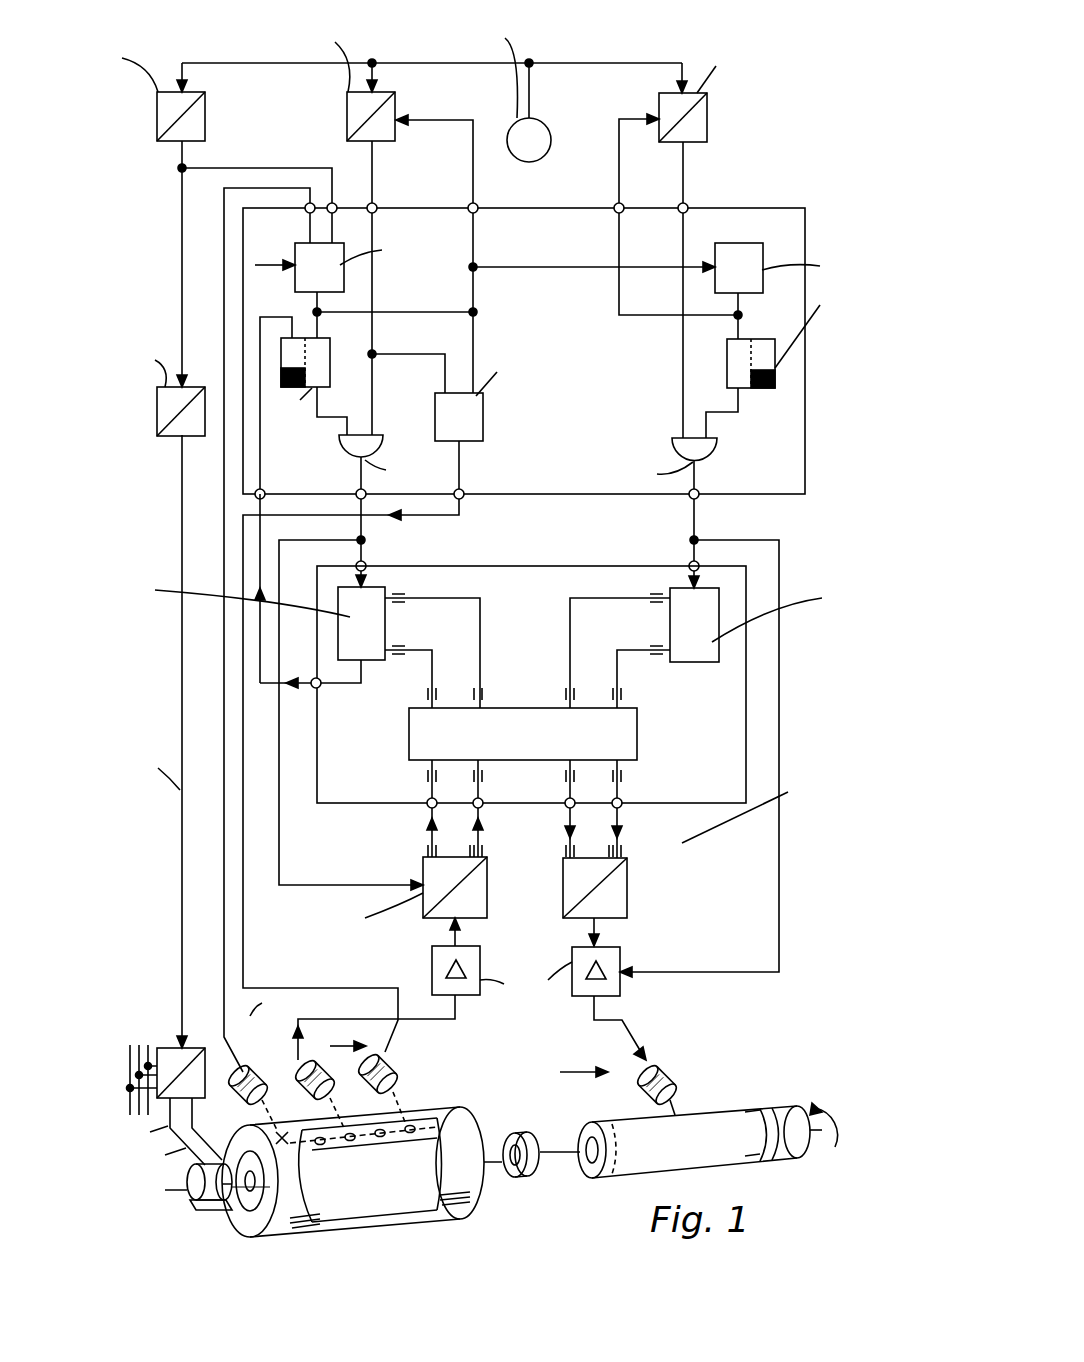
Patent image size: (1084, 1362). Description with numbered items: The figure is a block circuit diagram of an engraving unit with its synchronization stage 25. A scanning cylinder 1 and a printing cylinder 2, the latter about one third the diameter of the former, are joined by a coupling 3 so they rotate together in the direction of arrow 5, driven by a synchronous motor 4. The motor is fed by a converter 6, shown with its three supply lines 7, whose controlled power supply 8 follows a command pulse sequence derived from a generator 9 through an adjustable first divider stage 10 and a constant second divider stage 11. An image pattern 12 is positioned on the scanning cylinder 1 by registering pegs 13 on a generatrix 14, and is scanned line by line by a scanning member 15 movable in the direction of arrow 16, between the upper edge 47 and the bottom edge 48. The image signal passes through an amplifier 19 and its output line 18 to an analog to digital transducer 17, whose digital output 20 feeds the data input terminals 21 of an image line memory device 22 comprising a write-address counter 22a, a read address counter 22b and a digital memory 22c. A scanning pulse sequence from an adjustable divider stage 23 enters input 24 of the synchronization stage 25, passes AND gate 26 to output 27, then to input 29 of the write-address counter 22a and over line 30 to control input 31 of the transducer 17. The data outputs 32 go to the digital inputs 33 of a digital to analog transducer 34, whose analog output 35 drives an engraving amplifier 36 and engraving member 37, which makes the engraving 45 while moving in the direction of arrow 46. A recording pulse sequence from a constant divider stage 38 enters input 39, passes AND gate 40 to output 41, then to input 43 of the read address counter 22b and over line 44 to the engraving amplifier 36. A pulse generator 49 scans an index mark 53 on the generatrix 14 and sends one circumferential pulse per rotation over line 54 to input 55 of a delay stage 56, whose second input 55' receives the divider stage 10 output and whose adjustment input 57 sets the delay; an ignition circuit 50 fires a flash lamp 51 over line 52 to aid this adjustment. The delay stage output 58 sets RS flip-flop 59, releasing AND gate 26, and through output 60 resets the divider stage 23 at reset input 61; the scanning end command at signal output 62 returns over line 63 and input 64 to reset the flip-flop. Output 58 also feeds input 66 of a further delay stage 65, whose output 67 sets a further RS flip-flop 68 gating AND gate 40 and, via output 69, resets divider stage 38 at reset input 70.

The scanning cylinder 1 is at (472, 1188).
The printing cylinder 2 is at (597, 1122).
The coupling 3 is at (520, 1131).
The synchronous motor 4 is at (194, 1198).
The arrow 5 is at (813, 1098).
The converter 6 is at (170, 1048).
The three-phase supply lines 7 is at (132, 1046).
The controlled power supply 8 is at (193, 1123).
The generator 9 is at (541, 124).
The first divider stage 10 is at (200, 110).
The second divider stage 11 is at (186, 432).
The image pattern 12 is at (462, 1208).
The registering pegs 13 is at (418, 1125).
The generatrix 14 is at (448, 1112).
The scanning member 15 is at (303, 1070).
The arrow 16 is at (330, 1046).
The analog to digital transducer 17 is at (487, 885).
The amplifier output line 18 is at (446, 922).
The amplifier 19 is at (469, 968).
The digital output 20 is at (478, 852).
The data input terminals 21 is at (430, 823).
The image line memory device 22 is at (334, 805).
The write-address counter 22a is at (372, 607).
The read address counter 22b is at (678, 603).
The digital memory 22c is at (637, 737).
The frequency divider stage 23 is at (392, 114).
The input 24 is at (375, 203).
The synchronization stage 25 is at (540, 494).
The AND gate 26 is at (375, 432).
The output 27 is at (357, 490).
The input 29 is at (368, 562).
The line 30 is at (280, 614).
The control input 31 is at (415, 878).
The data outputs 32 is at (590, 808).
The digital inputs 33 is at (598, 853).
The digital to analog transducer 34 is at (632, 880).
The analog output 35 is at (600, 924).
The engraving amplifier 36 is at (620, 986).
The engraving member 37 is at (666, 1070).
The divider stage 38 is at (707, 120).
The input 39 is at (687, 204).
The AND gate 40 is at (674, 434).
The output 41 is at (690, 500).
The input 43 is at (689, 566).
The line 44 is at (778, 858).
The engraving 45 is at (705, 1130).
The arrow 46 is at (560, 1072).
The upper edge 47 is at (320, 1148).
The bottom edge 48 is at (333, 1212).
The pulse generator 49 is at (247, 1070).
The ignition circuit 50 is at (480, 416).
The flash lamp 51 is at (392, 1072).
The line 52 is at (428, 517).
The index mark 53 is at (283, 1131).
The line 54 is at (223, 750).
The input 55 is at (287, 191).
The second input 55' is at (276, 201).
The delay stage 56 is at (345, 249).
The adjustment input 57 is at (294, 259).
The output 58 is at (315, 300).
The RS flip-flop 59 is at (320, 380).
The output 60 is at (478, 204).
The reset input 61 is at (403, 117).
The signal output 62 is at (312, 680).
The line 63 is at (262, 692).
The input 64 is at (267, 490).
The further time delay stage 65 is at (762, 265).
The input 66 is at (712, 264).
The output 67 is at (742, 302).
The further RS flip-flop 68 is at (727, 376).
The output 69 is at (615, 205).
The reset input 70 is at (654, 114).